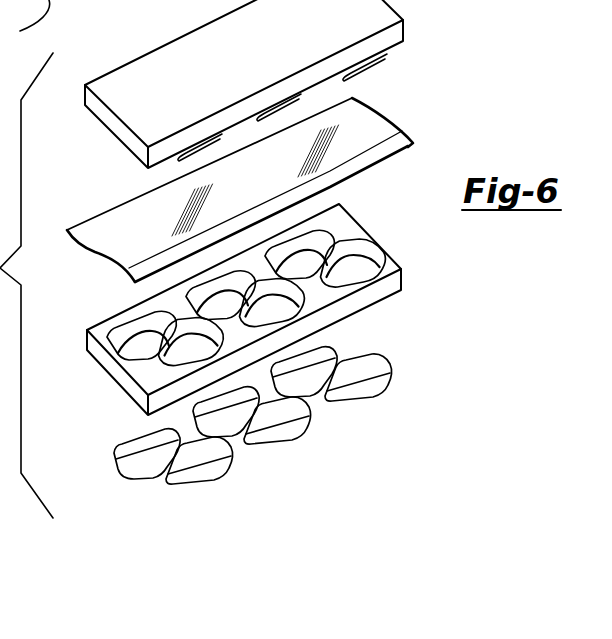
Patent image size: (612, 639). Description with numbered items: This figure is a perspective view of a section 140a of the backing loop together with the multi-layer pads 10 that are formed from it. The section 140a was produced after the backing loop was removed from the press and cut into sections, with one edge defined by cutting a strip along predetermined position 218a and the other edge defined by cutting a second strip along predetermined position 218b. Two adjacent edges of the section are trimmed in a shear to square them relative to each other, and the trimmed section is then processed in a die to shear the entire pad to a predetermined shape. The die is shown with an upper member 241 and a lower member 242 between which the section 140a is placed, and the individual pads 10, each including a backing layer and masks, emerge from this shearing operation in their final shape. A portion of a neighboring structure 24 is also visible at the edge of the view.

The multi-layer pad 10 is at (188, 481).
The housing wall 24 is at (26, 259).
The section 140a is at (394, 98).
The predetermined position 218a is at (412, 141).
The predetermined position 218b is at (134, 207).
The upper member 241 is at (230, 75).
The lower member 242 is at (388, 264).